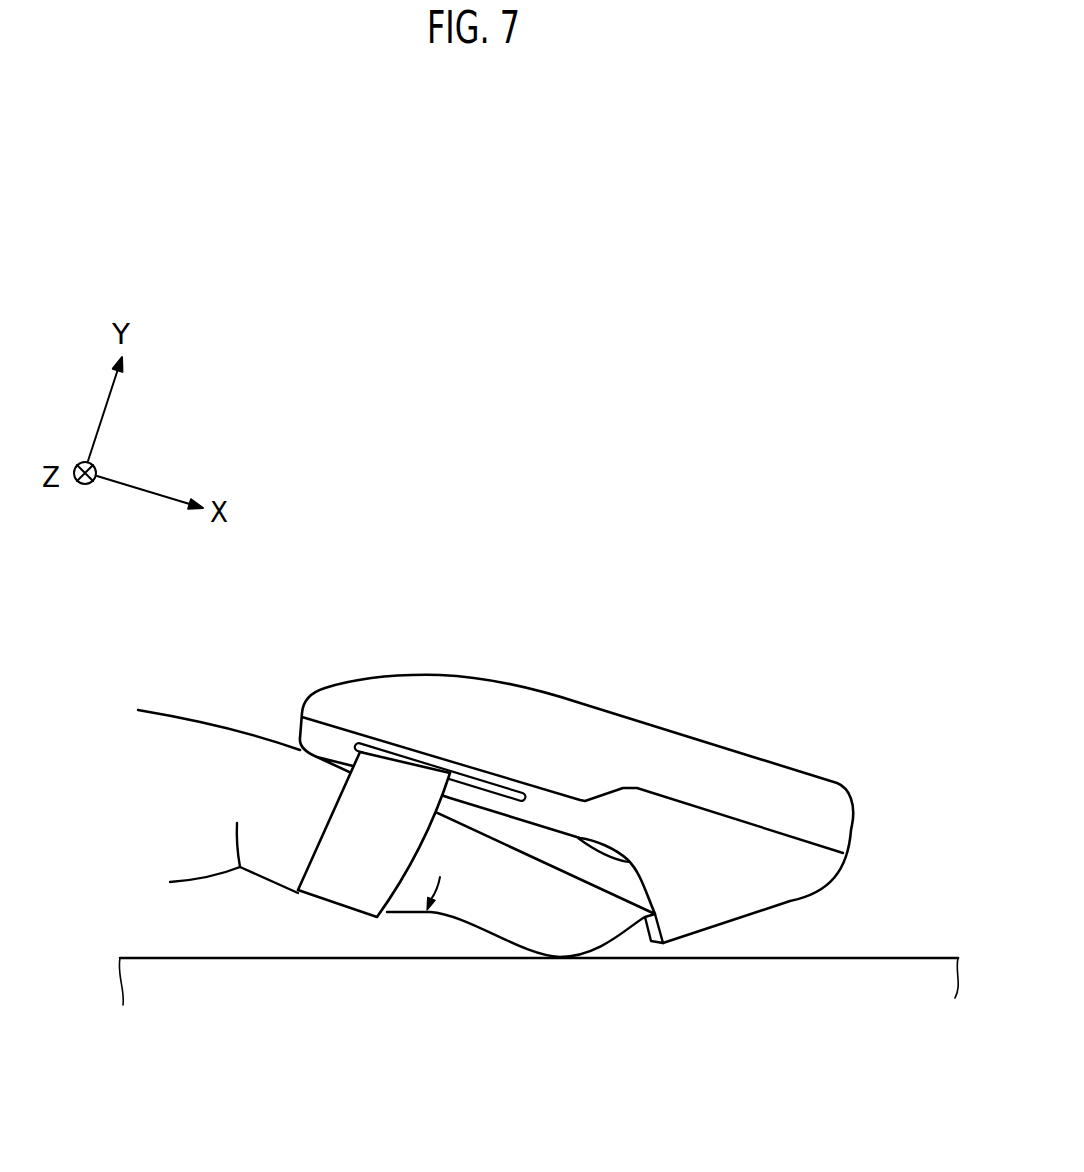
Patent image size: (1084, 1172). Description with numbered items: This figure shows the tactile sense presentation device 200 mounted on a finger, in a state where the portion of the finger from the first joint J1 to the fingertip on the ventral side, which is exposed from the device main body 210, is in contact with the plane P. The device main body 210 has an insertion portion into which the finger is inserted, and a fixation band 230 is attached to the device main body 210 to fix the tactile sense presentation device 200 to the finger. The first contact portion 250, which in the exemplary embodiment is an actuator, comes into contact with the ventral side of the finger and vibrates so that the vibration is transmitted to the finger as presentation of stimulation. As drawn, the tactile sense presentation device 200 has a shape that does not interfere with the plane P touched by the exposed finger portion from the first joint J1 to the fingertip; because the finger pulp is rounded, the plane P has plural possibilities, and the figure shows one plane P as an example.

The tactile sense presentation device 200 is at (576, 730).
The device main body 210 is at (693, 737).
The fixation band 230 is at (347, 895).
The first contact portion 250 is at (643, 940).
The plane P is at (177, 957).
The first joint J1 is at (453, 917).